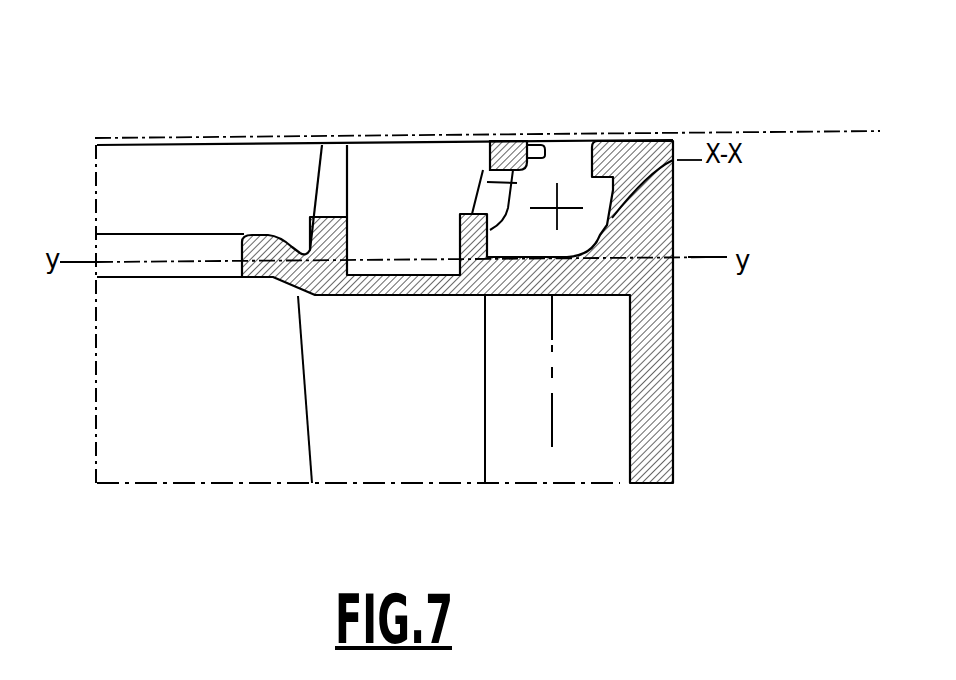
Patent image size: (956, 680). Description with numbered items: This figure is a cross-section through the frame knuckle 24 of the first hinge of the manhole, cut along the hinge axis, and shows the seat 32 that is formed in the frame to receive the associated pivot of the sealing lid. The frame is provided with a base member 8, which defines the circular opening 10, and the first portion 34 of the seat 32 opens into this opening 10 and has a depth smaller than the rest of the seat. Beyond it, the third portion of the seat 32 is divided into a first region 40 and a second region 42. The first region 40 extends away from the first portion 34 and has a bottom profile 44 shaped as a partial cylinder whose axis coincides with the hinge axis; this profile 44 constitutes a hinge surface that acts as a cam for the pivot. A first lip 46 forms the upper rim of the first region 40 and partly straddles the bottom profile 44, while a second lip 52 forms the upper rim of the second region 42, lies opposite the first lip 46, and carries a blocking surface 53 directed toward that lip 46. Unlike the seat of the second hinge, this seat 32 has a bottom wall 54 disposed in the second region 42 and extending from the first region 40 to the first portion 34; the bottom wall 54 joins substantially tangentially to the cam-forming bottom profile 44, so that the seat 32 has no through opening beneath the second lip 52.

The base member 8 is at (413, 477).
The circular opening 10 is at (198, 163).
The frame knuckle 24 is at (770, 107).
The seat 32 is at (587, 121).
The first portion 34 is at (402, 160).
The first region 40 is at (628, 397).
The second region 42 is at (550, 397).
The bottom profile 44 is at (604, 200).
The first lip 46 is at (602, 158).
The second lip 52 is at (508, 141).
The blocking surface 53 is at (540, 146).
The bottom wall 54 is at (513, 295).